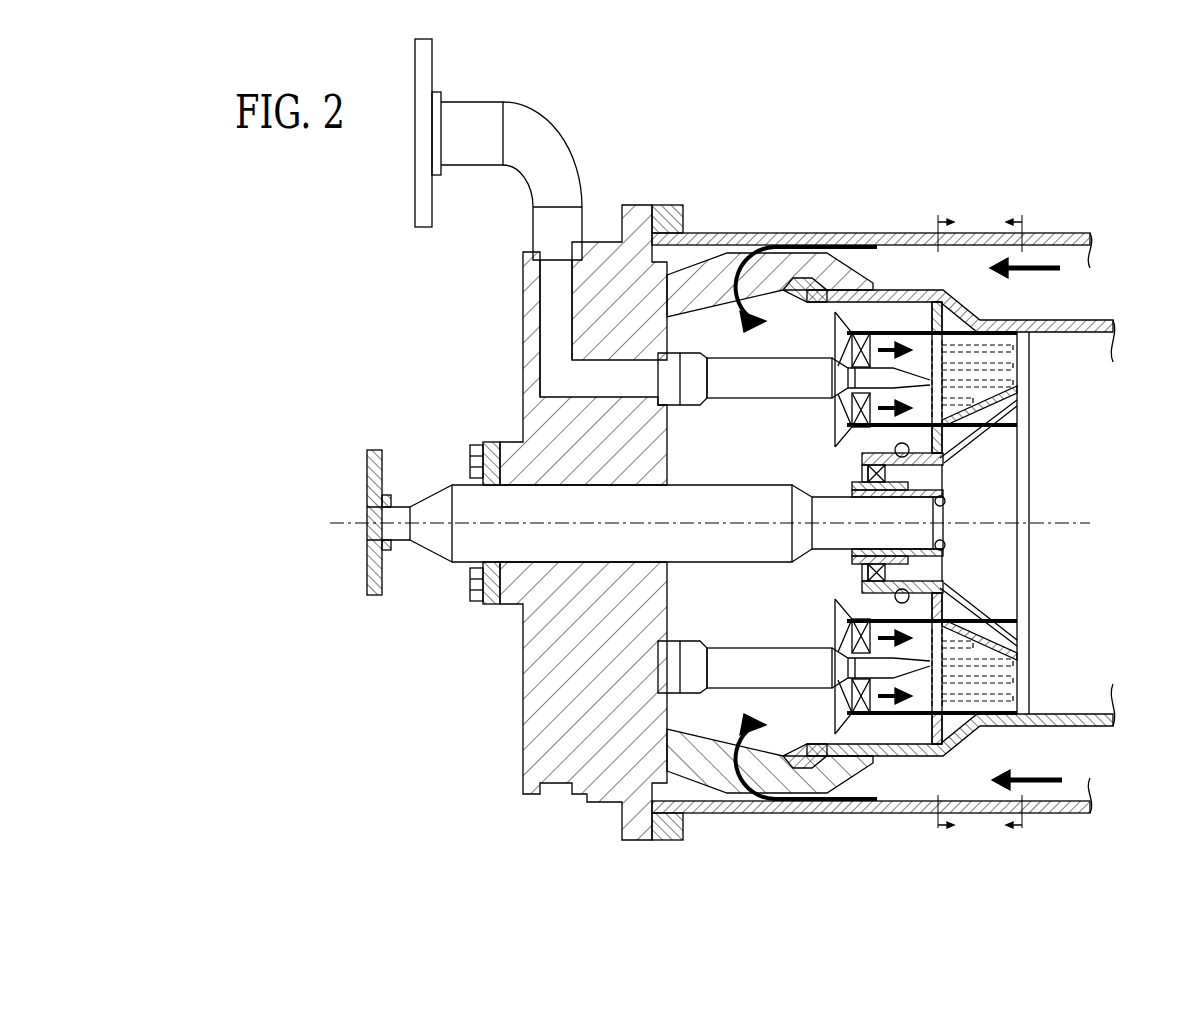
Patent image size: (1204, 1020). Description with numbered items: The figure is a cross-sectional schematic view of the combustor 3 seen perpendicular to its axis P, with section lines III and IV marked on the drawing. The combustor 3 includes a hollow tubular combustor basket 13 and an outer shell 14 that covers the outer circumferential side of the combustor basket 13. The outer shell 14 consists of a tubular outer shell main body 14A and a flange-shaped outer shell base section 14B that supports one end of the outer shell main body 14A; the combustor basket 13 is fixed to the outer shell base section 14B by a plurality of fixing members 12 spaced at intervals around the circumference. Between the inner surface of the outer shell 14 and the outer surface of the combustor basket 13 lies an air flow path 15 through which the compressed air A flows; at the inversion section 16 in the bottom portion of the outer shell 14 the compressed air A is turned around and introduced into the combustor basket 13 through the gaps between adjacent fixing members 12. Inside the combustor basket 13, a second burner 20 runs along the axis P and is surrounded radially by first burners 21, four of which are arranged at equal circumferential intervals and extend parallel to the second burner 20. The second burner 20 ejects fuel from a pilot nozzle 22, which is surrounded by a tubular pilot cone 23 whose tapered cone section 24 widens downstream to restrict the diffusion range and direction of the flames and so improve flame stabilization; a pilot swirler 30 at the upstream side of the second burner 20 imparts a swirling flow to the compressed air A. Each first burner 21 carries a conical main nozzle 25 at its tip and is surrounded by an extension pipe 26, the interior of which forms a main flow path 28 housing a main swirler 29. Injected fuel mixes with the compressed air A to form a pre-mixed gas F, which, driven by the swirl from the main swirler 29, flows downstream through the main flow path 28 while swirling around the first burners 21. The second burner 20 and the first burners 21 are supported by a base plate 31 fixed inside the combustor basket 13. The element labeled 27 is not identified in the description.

The combustor 3 is at (1128, 188).
The fixing member 12 is at (697, 278).
The combustor basket 13 is at (1080, 320).
The outer shell 14 is at (650, 546).
The outer shell main body 14A is at (845, 803).
The outer shell base section 14B is at (537, 738).
The air flow path 15 is at (960, 780).
The inversion section 16 is at (717, 250).
The second burner 20 is at (970, 537).
The first burner 21 is at (1050, 389).
The pilot nozzle 22 is at (923, 511).
The pilot cone 23 is at (975, 457).
The tapered cone section 24 is at (980, 607).
The main nozzle 25 is at (762, 357).
The extension pipe 26 is at (1012, 343).
The baffle plate 27 is at (1017, 353).
The main flow path 28 is at (843, 312).
The main swirler 29 is at (862, 345).
The pilot swirler 30 is at (883, 573).
The base plate 31 is at (943, 308).
The compressed air A is at (1052, 262).
The pre-mixed gas F is at (870, 417).
The axis P is at (735, 507).
The section line IV is at (942, 524).
The section line III is at (1020, 524).